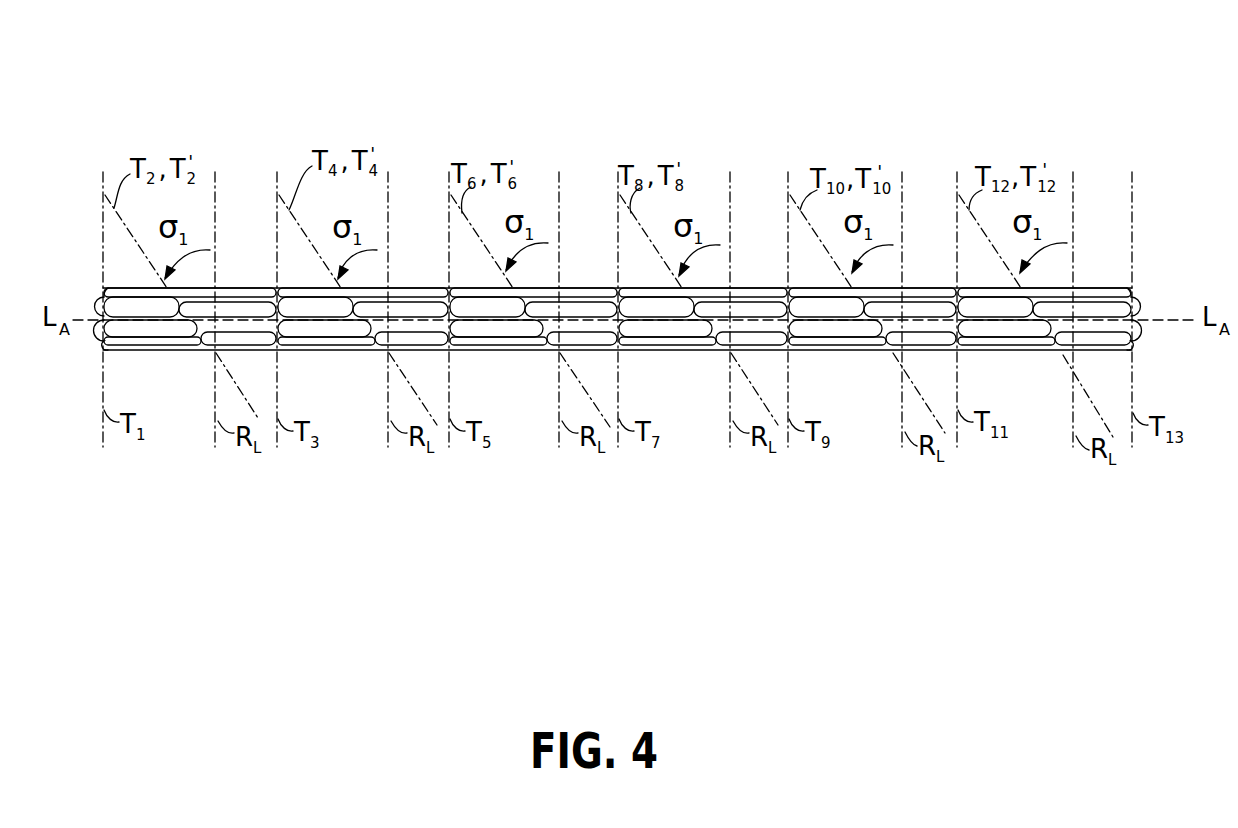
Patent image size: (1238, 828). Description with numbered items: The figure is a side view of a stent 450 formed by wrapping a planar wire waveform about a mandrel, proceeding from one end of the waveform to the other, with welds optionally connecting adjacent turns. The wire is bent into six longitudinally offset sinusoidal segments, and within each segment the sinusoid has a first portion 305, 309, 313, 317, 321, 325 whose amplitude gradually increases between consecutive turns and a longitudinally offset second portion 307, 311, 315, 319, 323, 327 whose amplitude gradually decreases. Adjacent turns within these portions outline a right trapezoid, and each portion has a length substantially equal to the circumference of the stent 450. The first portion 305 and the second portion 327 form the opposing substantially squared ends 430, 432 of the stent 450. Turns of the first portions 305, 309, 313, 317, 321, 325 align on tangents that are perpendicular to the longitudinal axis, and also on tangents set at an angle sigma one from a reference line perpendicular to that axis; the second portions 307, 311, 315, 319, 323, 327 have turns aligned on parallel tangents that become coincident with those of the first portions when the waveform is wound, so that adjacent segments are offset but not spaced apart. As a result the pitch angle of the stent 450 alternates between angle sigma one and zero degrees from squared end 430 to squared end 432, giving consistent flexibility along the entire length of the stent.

The first portion 305 is at (147, 351).
The second portion 307 is at (217, 287).
The first portion 309 is at (320, 352).
The second portion 311 is at (390, 287).
The first portion 313 is at (490, 353).
The second portion 315 is at (561, 287).
The first portion 317 is at (645, 352).
The second portion 319 is at (732, 287).
The first portion 321 is at (822, 352).
The second portion 323 is at (904, 287).
The first portion 325 is at (1007, 352).
The second portion 327 is at (1075, 287).
The squared end 430 is at (105, 328).
The squared end 432 is at (1133, 293).
The stent 450 is at (938, 82).